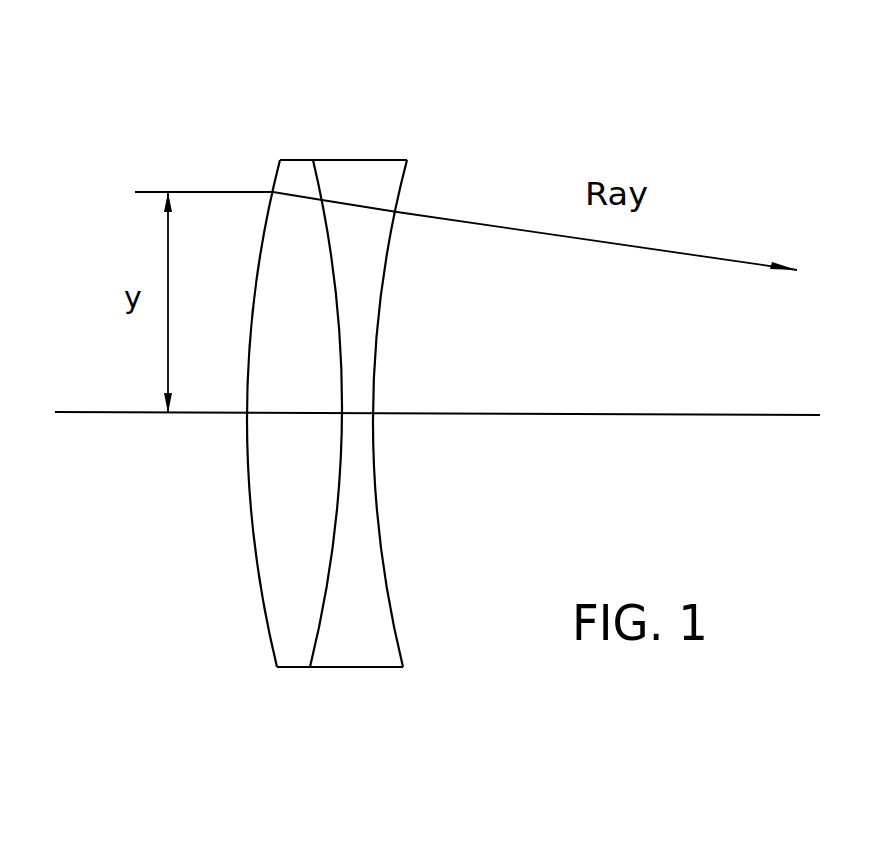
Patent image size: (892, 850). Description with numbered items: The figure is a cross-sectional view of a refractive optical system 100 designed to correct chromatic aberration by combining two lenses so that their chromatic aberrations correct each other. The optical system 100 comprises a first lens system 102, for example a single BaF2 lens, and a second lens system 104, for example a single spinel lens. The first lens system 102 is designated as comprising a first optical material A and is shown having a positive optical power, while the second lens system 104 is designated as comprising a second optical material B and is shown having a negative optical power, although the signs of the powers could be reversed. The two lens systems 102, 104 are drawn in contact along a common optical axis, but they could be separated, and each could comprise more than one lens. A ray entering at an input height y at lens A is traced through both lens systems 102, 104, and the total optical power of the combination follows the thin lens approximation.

The optical system 100 is at (112, 48).
The first lens system 102 is at (277, 668).
The second lens system 104 is at (395, 668).